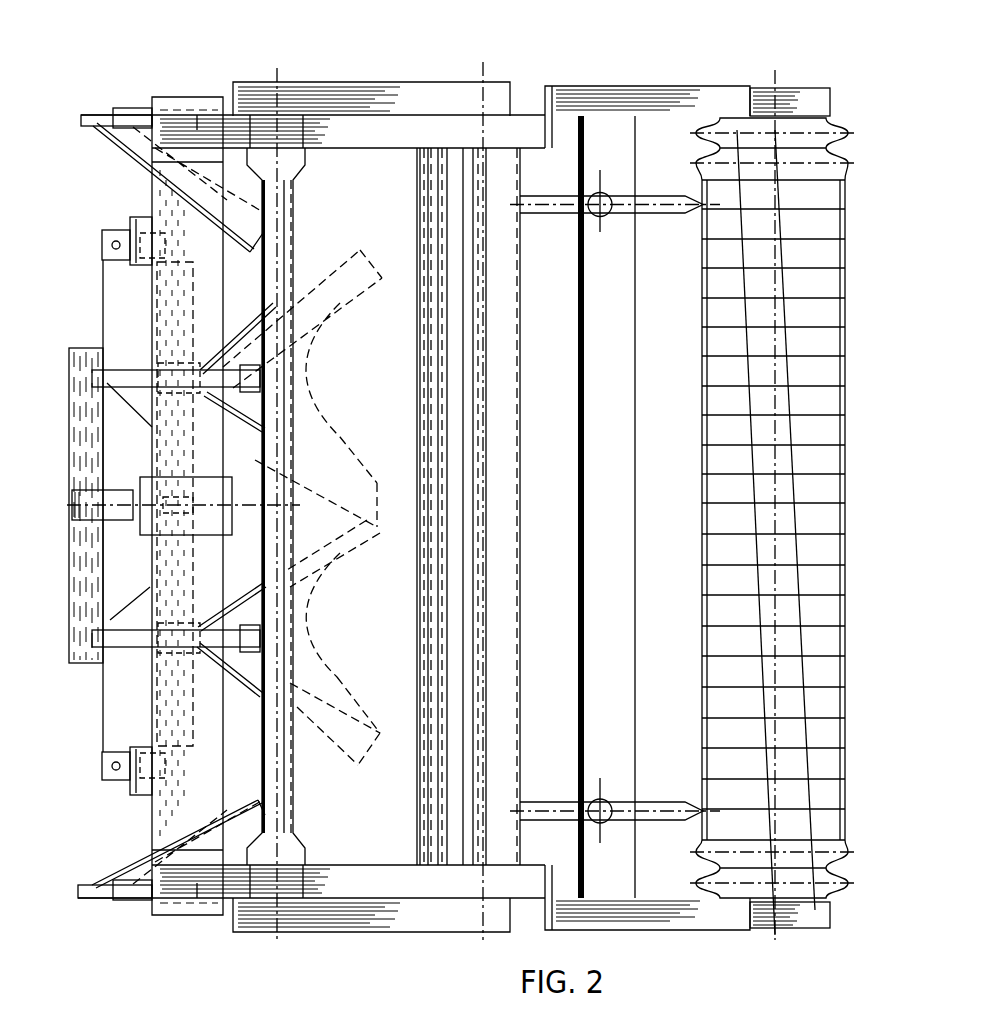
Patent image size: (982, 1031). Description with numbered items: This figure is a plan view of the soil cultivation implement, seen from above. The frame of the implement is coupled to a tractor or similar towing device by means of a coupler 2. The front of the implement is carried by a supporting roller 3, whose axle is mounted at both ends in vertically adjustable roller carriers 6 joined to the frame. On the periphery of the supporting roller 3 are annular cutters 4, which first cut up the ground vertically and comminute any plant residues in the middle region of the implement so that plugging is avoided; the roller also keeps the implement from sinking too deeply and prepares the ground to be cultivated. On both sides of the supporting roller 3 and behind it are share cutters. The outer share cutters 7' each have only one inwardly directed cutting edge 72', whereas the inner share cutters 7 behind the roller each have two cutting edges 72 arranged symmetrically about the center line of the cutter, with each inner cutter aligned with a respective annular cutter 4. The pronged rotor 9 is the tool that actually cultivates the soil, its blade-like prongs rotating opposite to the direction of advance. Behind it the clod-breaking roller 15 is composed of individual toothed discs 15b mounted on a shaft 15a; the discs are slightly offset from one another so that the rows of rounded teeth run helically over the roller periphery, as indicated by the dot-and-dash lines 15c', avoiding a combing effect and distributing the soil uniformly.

The coupler 2 is at (78, 665).
The supporting roller 3 is at (117, 712).
The annular cutters 4 is at (93, 378).
The roller carriers 6 is at (107, 240).
The share cutters 7 is at (302, 503).
The outer share cutters 7' is at (115, 504).
The pronged rotor 9 is at (472, 887).
The clod-breaking roller 15 is at (760, 160).
The shaft 15a is at (775, 900).
The toothed discs 15b is at (738, 888).
The dot-and-dash lines 15c' is at (808, 471).
The cutting edges 72 is at (236, 493).
The cutting edge 72' is at (178, 505).